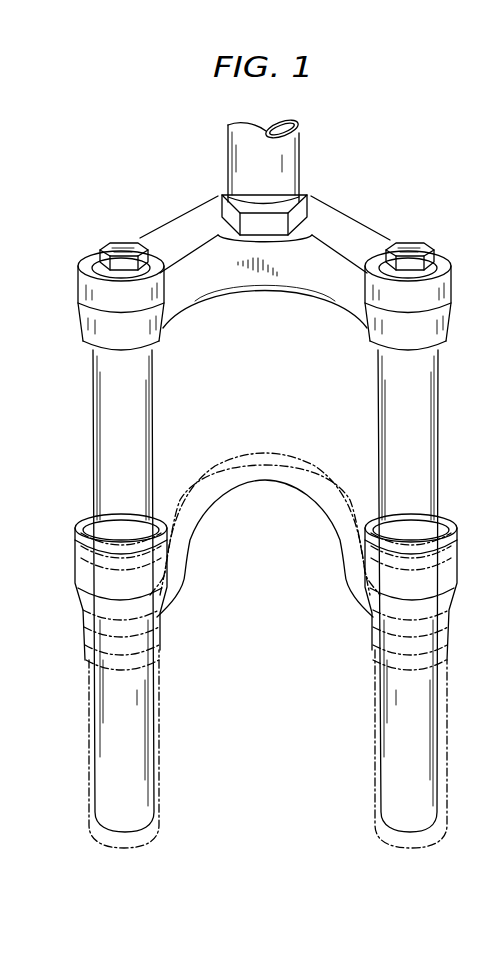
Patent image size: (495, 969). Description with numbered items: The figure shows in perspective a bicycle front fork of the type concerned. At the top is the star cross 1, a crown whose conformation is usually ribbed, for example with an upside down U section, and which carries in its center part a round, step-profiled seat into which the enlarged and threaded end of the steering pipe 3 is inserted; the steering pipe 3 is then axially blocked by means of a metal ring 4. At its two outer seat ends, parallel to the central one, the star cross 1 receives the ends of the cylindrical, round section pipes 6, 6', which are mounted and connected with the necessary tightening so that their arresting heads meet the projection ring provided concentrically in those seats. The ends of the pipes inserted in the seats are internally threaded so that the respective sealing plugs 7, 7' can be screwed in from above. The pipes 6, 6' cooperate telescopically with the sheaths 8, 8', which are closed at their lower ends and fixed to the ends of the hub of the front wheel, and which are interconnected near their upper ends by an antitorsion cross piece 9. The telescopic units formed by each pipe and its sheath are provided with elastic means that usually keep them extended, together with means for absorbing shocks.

The star cross 1 is at (351, 213).
The steering pipe 3 is at (302, 151).
The metal ring 4 is at (228, 216).
The cylindrical round section pipe 6 is at (431, 591).
The cylindrical round section pipe 6' is at (102, 591).
The sealing plug 7 is at (416, 238).
The sealing plug 7' is at (116, 239).
The sheath 8 is at (426, 681).
The sheath 8' is at (105, 681).
The antitorsion cross piece 9 is at (250, 464).